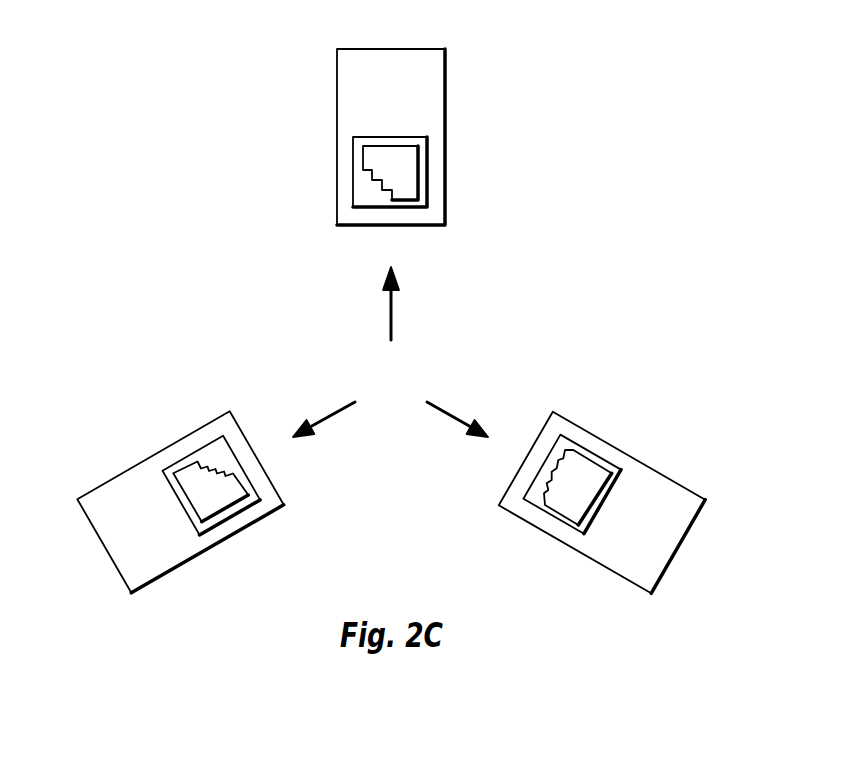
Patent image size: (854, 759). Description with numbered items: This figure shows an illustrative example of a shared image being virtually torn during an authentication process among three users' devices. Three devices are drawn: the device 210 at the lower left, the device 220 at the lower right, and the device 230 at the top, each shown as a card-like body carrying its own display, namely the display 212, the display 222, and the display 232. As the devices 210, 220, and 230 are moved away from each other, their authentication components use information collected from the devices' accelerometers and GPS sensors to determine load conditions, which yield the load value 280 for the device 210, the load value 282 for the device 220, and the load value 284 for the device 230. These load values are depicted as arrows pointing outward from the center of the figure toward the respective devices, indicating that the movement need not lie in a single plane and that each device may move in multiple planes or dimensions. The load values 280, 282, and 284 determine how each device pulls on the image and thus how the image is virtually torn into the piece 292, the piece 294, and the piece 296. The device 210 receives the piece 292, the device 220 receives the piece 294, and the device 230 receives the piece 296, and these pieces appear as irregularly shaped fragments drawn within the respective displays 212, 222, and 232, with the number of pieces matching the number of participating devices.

The device 210 is at (115, 472).
The display 212 is at (215, 523).
The device 220 is at (667, 478).
The display 222 is at (597, 452).
The device 230 is at (445, 98).
The display 232 is at (428, 172).
The load value 280 is at (328, 415).
The load value 282 is at (450, 413).
The load value 284 is at (392, 318).
The piece 292 is at (233, 507).
The piece 294 is at (567, 452).
The piece 296 is at (418, 188).